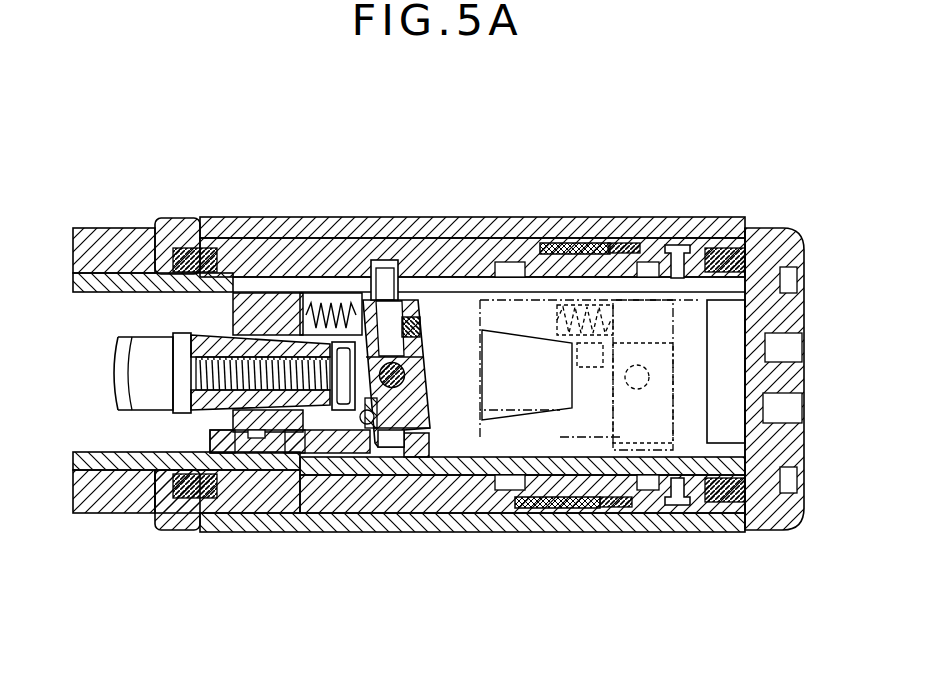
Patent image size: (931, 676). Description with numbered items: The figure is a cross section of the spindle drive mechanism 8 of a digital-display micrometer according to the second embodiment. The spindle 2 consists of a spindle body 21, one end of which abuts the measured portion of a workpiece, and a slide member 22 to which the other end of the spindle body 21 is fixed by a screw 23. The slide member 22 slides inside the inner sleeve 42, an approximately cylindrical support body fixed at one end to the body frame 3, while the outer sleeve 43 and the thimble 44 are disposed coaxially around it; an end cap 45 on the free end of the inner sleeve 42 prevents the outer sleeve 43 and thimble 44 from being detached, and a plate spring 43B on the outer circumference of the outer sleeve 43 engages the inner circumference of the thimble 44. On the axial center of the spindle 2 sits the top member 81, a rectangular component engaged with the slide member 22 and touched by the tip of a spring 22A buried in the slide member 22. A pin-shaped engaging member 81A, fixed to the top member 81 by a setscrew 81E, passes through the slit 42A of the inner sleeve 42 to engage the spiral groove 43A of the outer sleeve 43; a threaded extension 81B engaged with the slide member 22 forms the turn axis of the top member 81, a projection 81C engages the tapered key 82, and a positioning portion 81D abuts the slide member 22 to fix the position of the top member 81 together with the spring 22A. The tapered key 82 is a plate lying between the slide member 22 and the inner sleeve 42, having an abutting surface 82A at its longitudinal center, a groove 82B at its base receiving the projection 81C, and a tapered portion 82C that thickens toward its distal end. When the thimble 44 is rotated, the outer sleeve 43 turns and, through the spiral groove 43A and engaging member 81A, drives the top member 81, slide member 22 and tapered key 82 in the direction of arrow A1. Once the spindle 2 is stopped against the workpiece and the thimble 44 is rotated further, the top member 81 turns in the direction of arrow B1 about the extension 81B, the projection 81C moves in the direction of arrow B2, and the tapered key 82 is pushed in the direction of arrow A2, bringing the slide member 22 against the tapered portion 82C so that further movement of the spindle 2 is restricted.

The spindle 2 is at (322, 158).
The body frame 3 is at (88, 228).
The spindle drive mechanism 8 is at (700, 130).
The spindle body 21 is at (157, 340).
The slide member 22 is at (262, 330).
The spring 22A is at (333, 300).
The screw 23 is at (338, 344).
The inner sleeve 42 is at (85, 292).
The slit 42A is at (572, 243).
The outer sleeve 43 is at (490, 218).
The spiral groove 43A is at (535, 262).
The plate spring 43B is at (610, 240).
The thimble 44 is at (735, 222).
The end cap 45 is at (780, 228).
The top member 81 is at (428, 356).
The engaging member 81A is at (385, 262).
The extension 81B is at (405, 375).
The projection 81C is at (423, 440).
The positioning portion 81D is at (373, 432).
The setscrew 81E is at (424, 300).
The tapered key 82 is at (210, 434).
The abutting surface 82A is at (290, 432).
The groove 82B is at (405, 433).
The tapered portion 82C is at (233, 447).
The arrow A1 is at (640, 582).
The arrow A2 is at (630, 607).
The arrow B1 is at (373, 314).
The arrow B2 is at (385, 417).